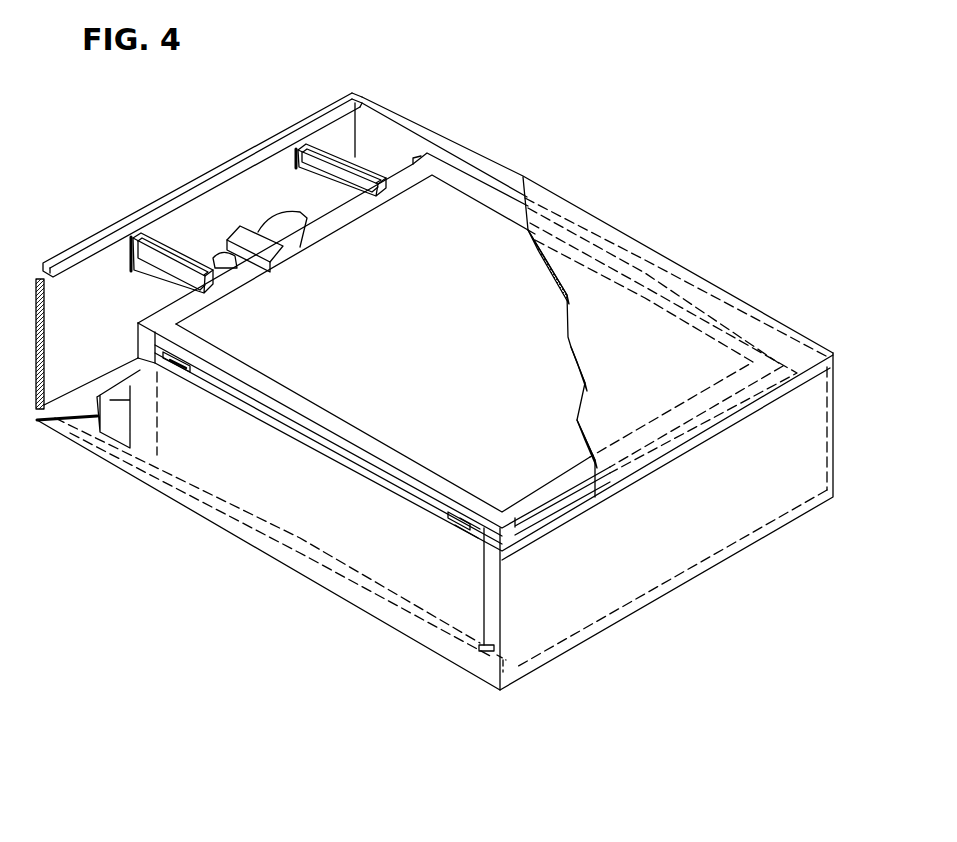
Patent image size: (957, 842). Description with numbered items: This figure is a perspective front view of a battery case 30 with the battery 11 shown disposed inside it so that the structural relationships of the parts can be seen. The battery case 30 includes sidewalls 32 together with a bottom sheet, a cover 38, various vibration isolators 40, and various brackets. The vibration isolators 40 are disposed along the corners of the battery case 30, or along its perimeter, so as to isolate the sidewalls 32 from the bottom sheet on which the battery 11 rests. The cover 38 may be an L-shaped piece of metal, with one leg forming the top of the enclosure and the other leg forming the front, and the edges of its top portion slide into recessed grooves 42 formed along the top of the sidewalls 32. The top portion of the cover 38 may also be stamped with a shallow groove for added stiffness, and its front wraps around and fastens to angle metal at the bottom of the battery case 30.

The battery 11 is at (455, 222).
The battery case 30 is at (590, 130).
The sidewalls 32 is at (38, 412).
The cover 38 is at (598, 295).
The vibration isolators 40 is at (298, 156).
The recessed grooves 42 is at (36, 279).